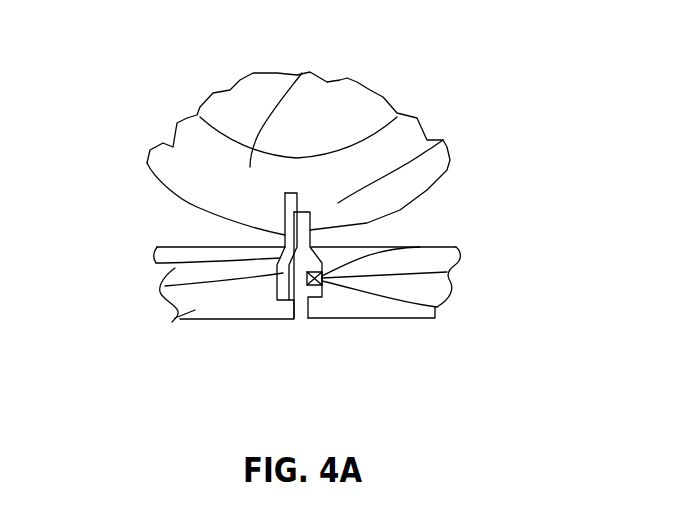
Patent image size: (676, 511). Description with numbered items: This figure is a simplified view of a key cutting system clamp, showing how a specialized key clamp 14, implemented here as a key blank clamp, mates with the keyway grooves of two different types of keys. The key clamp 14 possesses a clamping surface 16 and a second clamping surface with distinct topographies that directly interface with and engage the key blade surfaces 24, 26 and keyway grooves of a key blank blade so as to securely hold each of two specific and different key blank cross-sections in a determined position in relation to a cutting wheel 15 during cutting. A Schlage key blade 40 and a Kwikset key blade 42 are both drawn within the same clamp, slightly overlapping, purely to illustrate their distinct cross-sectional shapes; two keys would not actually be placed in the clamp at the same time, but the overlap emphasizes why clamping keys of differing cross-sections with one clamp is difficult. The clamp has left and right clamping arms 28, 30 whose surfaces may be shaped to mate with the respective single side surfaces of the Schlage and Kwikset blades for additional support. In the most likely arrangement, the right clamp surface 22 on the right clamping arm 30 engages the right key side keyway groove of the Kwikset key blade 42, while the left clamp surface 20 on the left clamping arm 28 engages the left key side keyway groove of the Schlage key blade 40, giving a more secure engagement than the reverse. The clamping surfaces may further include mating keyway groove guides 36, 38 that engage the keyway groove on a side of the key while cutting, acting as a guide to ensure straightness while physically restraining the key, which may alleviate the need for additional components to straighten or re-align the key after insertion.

The key clamp 14 is at (137, 312).
The cutting wheel 15 is at (302, 73).
The clamping surface 16 is at (157, 266).
The left clamp surface 20 is at (274, 298).
The right clamp surface 22 is at (440, 308).
The key blade surface 24 is at (322, 267).
The key blade surface 26 is at (443, 140).
The left clamping arm 28 is at (172, 322).
The right clamping arm 30 is at (423, 317).
The keyway groove guide 36 is at (460, 244).
The keyway groove guide 38 is at (284, 270).
The Schlage key blade 40 is at (158, 292).
The Kwikset key blade 42 is at (447, 272).